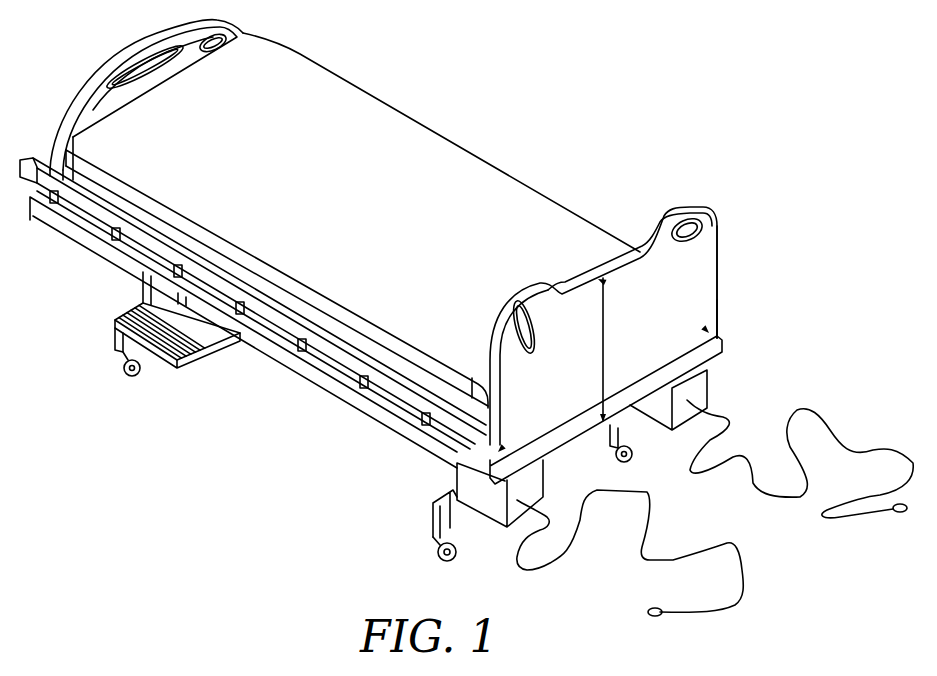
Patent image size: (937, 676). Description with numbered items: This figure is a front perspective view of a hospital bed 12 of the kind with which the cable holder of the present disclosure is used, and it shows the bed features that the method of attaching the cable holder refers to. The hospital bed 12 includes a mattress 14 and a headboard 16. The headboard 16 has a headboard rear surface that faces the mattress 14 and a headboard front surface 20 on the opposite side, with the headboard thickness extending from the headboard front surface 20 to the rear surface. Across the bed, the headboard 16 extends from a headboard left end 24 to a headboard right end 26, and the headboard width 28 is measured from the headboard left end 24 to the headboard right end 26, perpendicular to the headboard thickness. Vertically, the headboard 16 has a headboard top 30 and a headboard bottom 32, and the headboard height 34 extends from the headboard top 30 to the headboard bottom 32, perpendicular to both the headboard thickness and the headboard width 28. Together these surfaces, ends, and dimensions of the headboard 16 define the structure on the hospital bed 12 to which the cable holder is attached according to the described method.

The hospital bed 12 is at (466, 315).
The mattress 14 is at (347, 97).
The headboard 16 is at (640, 295).
The headboard front surface 20 is at (703, 273).
The headboard left end 24 is at (720, 312).
The headboard width 28 is at (637, 372).
The headboard top 30 is at (597, 287).
The headboard bottom 32 is at (557, 457).
The headboard height 34 is at (600, 318).
The headboard right end 26 is at (440, 410).